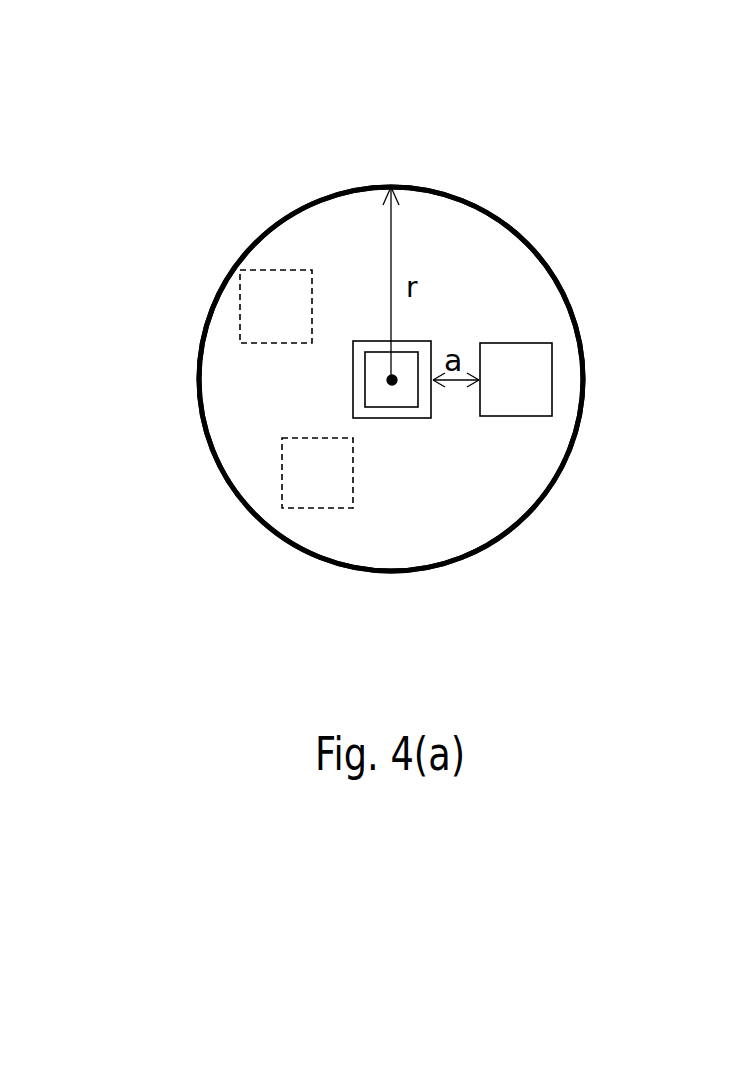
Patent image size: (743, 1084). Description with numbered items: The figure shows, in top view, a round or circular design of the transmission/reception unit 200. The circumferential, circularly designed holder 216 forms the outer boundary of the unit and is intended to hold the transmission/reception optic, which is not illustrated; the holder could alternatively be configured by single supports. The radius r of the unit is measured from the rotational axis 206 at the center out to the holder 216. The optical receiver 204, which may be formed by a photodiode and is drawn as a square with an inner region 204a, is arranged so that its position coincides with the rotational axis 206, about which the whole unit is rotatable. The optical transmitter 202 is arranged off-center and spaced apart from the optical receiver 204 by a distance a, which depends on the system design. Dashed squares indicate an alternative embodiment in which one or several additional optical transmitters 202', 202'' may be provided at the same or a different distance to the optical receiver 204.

The transmission/reception unit 200 is at (492, 163).
The holder 216 is at (547, 263).
The optical receiver 204 is at (418, 412).
The inner sensor region 204a is at (392, 400).
The rotational axis 206 is at (387, 381).
The optical transmitter 202 is at (585, 419).
The additional optical transmitter 202'' is at (207, 291).
The additional optical transmitter 202' is at (243, 500).